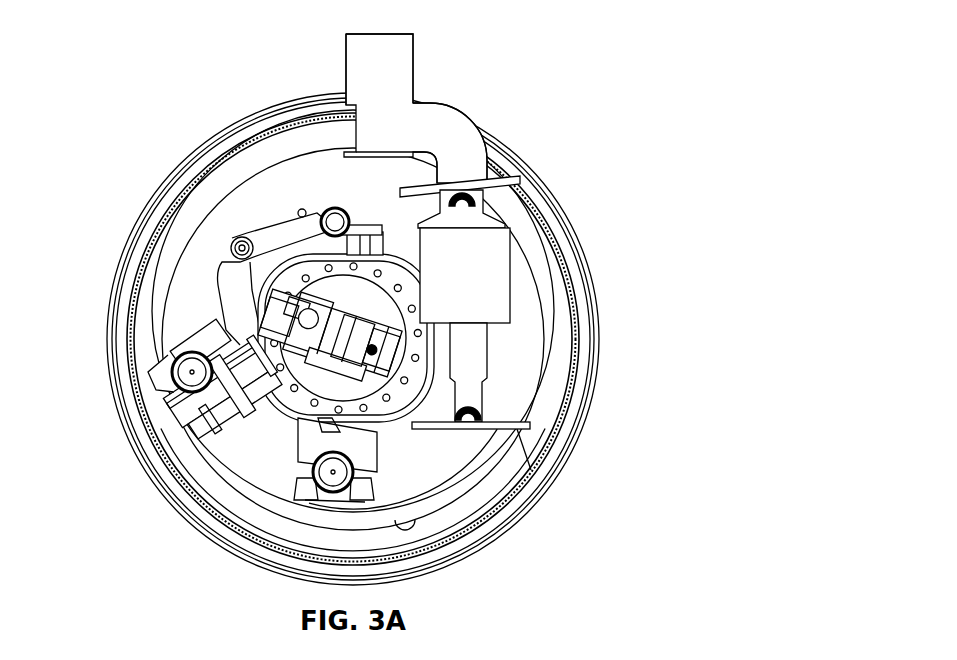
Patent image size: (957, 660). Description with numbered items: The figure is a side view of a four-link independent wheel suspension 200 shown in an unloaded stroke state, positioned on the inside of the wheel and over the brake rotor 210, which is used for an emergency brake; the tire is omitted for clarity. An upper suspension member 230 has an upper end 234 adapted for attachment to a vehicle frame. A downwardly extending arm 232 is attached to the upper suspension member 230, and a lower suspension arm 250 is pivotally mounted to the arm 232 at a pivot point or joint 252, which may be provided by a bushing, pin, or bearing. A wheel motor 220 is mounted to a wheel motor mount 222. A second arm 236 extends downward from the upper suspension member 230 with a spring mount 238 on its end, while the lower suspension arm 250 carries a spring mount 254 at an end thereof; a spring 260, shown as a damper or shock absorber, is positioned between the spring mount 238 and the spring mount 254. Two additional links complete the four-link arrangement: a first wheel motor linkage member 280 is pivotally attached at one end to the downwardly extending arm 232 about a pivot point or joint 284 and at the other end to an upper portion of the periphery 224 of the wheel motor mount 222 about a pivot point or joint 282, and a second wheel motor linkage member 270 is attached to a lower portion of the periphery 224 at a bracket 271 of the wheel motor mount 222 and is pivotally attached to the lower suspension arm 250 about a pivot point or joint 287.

The four-link independent wheel suspension 200 is at (538, 42).
The brake rotor 210 is at (597, 355).
The wheel motor 220 is at (318, 333).
The wheel motor mount 222 is at (305, 372).
The periphery 224 is at (303, 397).
The upper suspension member 230 is at (417, 106).
The downwardly extending arm 232 is at (183, 262).
The upper end 234 is at (405, 40).
The second arm 236 is at (462, 128).
The spring mount 238 is at (505, 181).
The lower suspension arm 250 is at (477, 450).
The pivot point or joint 252 is at (190, 372).
The spring mount 254 is at (512, 423).
The spring 260 is at (503, 273).
The second wheel motor linkage member 270 is at (358, 443).
The bracket 271 is at (330, 418).
The first wheel motor linkage member 280 is at (285, 233).
The pivot point or joint 282 is at (337, 218).
The pivot point or joint 284 is at (242, 238).
The pivot point or joint 287 is at (333, 471).